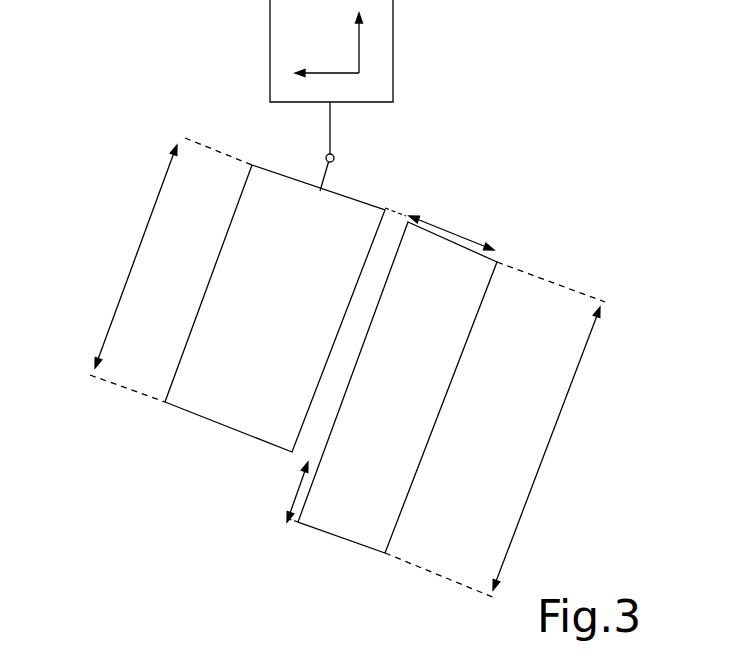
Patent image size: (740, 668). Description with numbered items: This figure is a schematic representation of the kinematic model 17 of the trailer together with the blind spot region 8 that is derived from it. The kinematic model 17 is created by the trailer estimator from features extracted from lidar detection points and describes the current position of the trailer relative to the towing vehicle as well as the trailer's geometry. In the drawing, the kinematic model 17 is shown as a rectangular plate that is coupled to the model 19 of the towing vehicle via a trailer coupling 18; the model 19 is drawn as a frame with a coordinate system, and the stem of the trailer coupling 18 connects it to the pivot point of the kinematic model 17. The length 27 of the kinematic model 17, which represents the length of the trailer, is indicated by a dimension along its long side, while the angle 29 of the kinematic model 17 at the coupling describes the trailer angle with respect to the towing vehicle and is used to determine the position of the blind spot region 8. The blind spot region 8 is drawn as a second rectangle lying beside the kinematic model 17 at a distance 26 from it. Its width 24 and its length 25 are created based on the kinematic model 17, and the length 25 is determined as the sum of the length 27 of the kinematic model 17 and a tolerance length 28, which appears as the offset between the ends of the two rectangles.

The blind spot region 8 is at (460, 360).
The kinematic model of the trailer 17 is at (177, 367).
The trailer coupling 18 is at (330, 118).
The model of the towing vehicle 19 is at (393, 53).
The width of the blind spot region 24 is at (478, 241).
The length of the blind spot region 25 is at (552, 438).
The distance of the blind spot region to the trailer 26 is at (405, 214).
The length of the kinematic model 27 is at (135, 248).
The tolerance length 28 is at (297, 492).
The angle of the kinematic model 29 is at (326, 156).